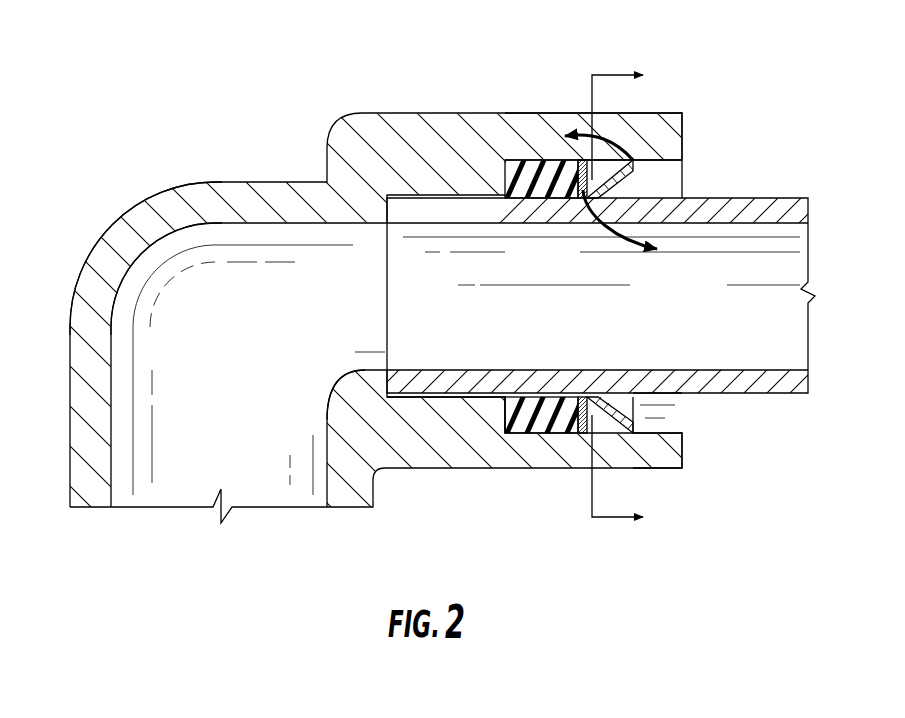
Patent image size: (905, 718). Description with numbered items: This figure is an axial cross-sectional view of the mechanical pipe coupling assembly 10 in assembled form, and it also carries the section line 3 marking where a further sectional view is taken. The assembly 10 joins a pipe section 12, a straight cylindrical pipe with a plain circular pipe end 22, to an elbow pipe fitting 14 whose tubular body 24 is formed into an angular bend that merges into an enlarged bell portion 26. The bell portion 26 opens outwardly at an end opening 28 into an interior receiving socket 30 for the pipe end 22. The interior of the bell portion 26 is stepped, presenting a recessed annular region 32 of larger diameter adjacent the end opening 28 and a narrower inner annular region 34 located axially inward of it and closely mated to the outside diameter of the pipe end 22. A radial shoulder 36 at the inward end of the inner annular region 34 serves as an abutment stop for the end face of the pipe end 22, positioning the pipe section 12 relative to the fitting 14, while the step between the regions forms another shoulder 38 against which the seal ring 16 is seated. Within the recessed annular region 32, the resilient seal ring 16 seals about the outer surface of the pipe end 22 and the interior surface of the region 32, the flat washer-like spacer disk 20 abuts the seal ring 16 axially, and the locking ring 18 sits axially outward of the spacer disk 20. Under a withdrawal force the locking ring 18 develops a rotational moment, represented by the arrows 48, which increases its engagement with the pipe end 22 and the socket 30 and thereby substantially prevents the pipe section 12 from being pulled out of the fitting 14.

The mechanical pipe coupling assembly 10 is at (343, 78).
The pipe section 12 is at (722, 198).
The pipe fitting 14 is at (262, 182).
The seal ring 16 is at (517, 158).
The locking ring 18 is at (633, 175).
The spacer disk 20 is at (583, 200).
The pipe end 22 is at (393, 290).
The tubular body 24 is at (138, 222).
The bell portion 26 is at (568, 125).
The end opening 28 is at (683, 430).
The receiving socket 30 is at (660, 410).
The recessed annular region 32 is at (550, 435).
The inner annular region 34 is at (453, 398).
The radial shoulder 36 is at (353, 373).
The shoulder 38 is at (505, 418).
The arrows 48 is at (513, 158).
The section line 3- 3 is at (617, 299).